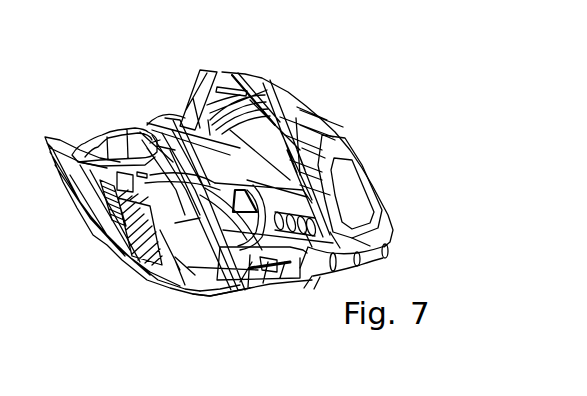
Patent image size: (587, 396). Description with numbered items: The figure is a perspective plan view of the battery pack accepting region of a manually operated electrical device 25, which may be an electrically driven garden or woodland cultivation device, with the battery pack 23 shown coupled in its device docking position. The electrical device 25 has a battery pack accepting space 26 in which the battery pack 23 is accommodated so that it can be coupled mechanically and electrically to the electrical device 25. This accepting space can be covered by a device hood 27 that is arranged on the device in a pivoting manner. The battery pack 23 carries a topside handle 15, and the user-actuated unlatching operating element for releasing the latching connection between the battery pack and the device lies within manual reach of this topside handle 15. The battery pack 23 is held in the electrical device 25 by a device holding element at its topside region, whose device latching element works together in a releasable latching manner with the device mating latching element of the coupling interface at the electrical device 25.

The battery pack 23 is at (187, 112).
The topside handle 15 is at (180, 148).
The device hood 27 is at (120, 253).
The electrical device 25 is at (222, 292).
The battery pack accepting space 26 is at (253, 267).